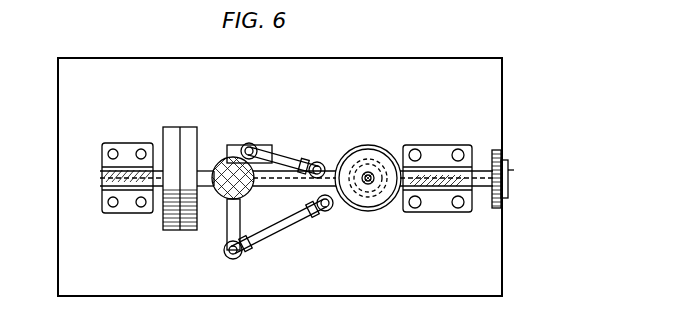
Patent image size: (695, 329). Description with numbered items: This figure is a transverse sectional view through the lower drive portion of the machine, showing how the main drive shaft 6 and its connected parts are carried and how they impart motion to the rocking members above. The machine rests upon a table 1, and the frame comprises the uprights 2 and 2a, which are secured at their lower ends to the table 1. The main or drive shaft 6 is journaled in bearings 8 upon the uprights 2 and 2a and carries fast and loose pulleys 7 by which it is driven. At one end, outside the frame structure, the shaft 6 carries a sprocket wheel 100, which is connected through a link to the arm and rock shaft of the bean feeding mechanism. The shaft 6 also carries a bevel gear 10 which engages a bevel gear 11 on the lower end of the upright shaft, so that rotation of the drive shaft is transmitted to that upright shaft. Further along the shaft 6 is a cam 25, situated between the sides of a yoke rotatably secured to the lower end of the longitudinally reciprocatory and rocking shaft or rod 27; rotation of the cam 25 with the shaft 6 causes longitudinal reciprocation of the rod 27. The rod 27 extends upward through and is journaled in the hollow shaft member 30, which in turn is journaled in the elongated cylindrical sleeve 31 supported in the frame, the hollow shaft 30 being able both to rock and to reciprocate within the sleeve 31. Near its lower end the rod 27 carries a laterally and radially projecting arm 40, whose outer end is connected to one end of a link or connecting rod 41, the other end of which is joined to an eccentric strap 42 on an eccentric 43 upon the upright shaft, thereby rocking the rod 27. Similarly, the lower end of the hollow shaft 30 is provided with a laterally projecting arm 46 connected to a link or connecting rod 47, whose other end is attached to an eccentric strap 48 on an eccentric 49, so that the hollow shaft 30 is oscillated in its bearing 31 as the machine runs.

The table 1 is at (77, 289).
The upright 2 is at (466, 172).
The upright 2a is at (100, 184).
The main or drive shaft 6 is at (207, 160).
The fast and loose pulleys 7 is at (180, 127).
The bearings 8 is at (104, 202).
The bevel gear 10 is at (392, 200).
The bevel gear 11 is at (368, 212).
The cam 25 is at (224, 152).
The reciprocatory and rocking shaft or rod 27 is at (222, 198).
The hollow shaft member 30 is at (220, 193).
The bearing sleeve 31 is at (165, 226).
The arm 40 is at (243, 223).
The link or connecting rod 41 is at (277, 236).
The eccentric strap 42 is at (330, 212).
The eccentric 43 is at (364, 150).
The arm 46 is at (249, 143).
The link or connecting rod 47 is at (282, 155).
The eccentric strap 48 is at (343, 165).
The eccentric 49 is at (378, 163).
The sprocket wheel 100 is at (509, 186).